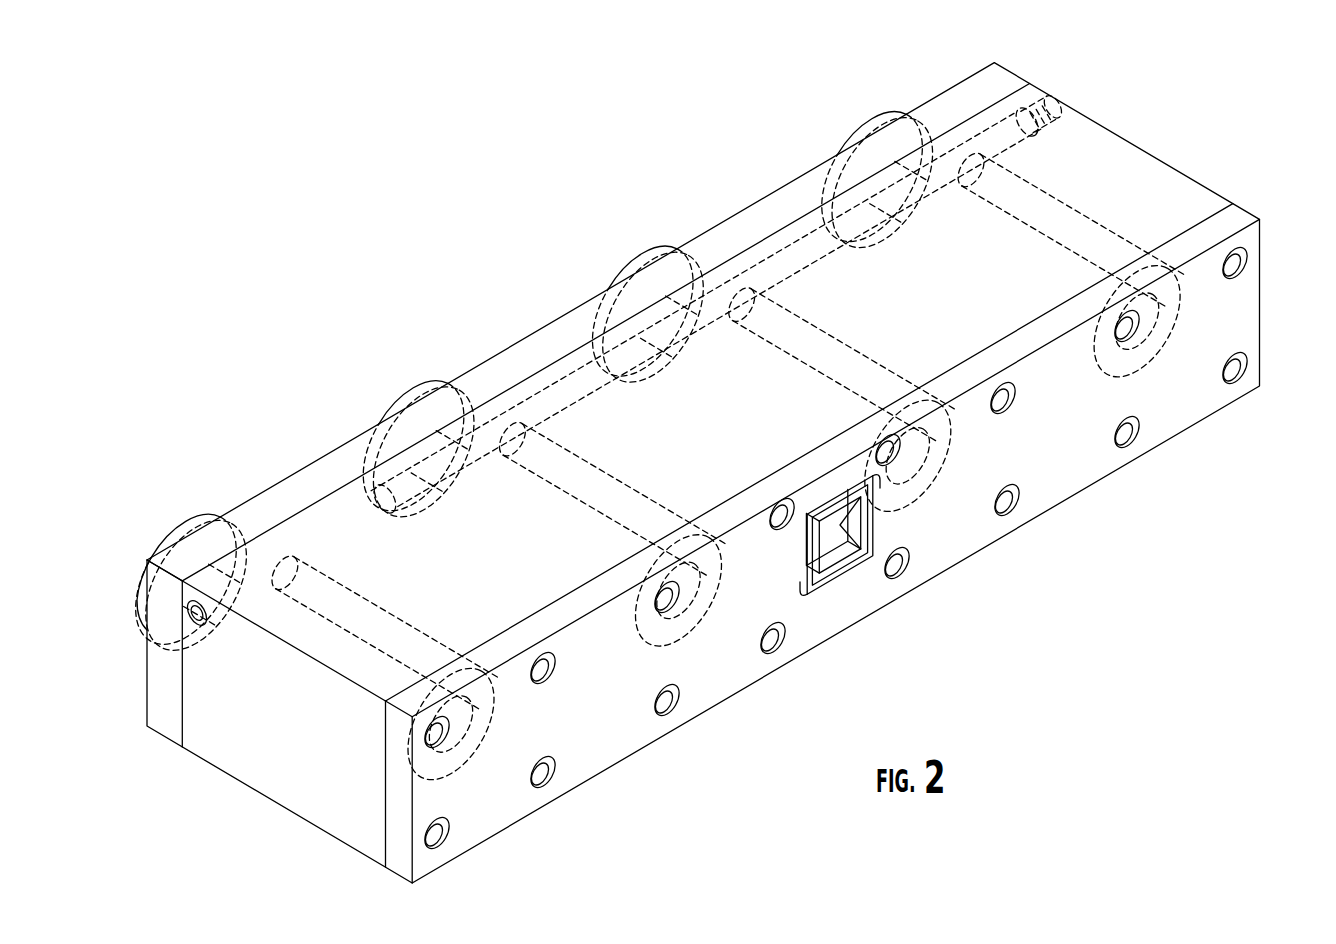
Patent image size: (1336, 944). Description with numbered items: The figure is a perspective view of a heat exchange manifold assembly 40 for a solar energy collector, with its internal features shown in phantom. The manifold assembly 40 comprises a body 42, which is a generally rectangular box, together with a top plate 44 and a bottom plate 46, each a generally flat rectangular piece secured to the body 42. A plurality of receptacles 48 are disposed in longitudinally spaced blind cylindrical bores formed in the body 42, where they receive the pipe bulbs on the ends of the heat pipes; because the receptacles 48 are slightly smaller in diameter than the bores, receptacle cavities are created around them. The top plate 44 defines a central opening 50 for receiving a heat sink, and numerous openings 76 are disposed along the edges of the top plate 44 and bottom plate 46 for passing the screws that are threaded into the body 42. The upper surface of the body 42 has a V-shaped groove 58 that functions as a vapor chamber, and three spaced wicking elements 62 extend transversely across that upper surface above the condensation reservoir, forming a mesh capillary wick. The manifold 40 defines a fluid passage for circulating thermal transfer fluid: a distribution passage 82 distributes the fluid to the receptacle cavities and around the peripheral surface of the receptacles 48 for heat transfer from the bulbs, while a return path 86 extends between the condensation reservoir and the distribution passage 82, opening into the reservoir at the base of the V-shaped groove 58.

The manifold assembly 40 is at (1148, 121).
The body 42 is at (1085, 128).
The top plate 44 is at (1188, 408).
The bottom plate 46 is at (527, 358).
The receptacles 48 is at (178, 528).
The central opening 50 is at (868, 585).
The V-shaped groove 58 is at (1050, 393).
The wicking elements 62 is at (840, 553).
The openings 76 is at (1248, 262).
The distribution passage 82 is at (812, 253).
The return path 86 is at (725, 432).